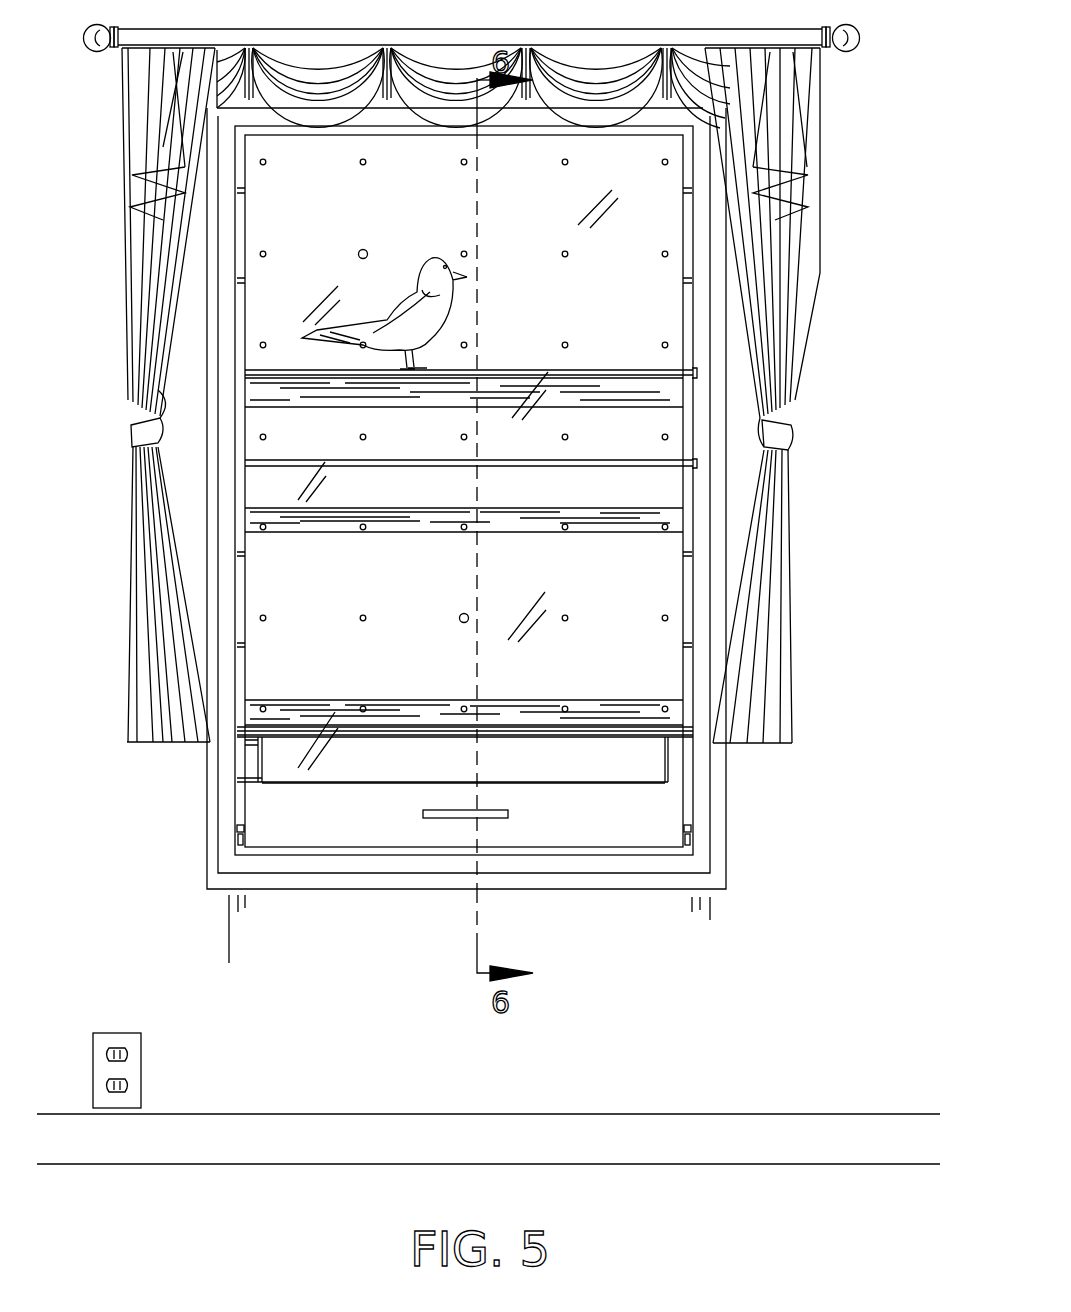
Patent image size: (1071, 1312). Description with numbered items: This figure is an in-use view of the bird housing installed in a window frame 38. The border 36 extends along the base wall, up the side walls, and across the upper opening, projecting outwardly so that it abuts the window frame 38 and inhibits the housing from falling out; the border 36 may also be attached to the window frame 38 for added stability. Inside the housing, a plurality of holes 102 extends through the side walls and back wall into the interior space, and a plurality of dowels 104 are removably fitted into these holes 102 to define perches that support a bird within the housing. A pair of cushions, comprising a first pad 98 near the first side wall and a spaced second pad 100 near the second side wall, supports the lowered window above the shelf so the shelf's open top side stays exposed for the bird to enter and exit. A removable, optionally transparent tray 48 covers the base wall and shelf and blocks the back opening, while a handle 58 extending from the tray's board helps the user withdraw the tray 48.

The border 36 is at (227, 827).
The window frame 38 is at (220, 878).
The tray 48 is at (653, 827).
The handle 58 is at (497, 818).
The first pad 98 is at (250, 752).
The second pad 100 is at (672, 765).
The plurality of holes 102 is at (568, 257).
The plurality of dowels 104 is at (668, 373).